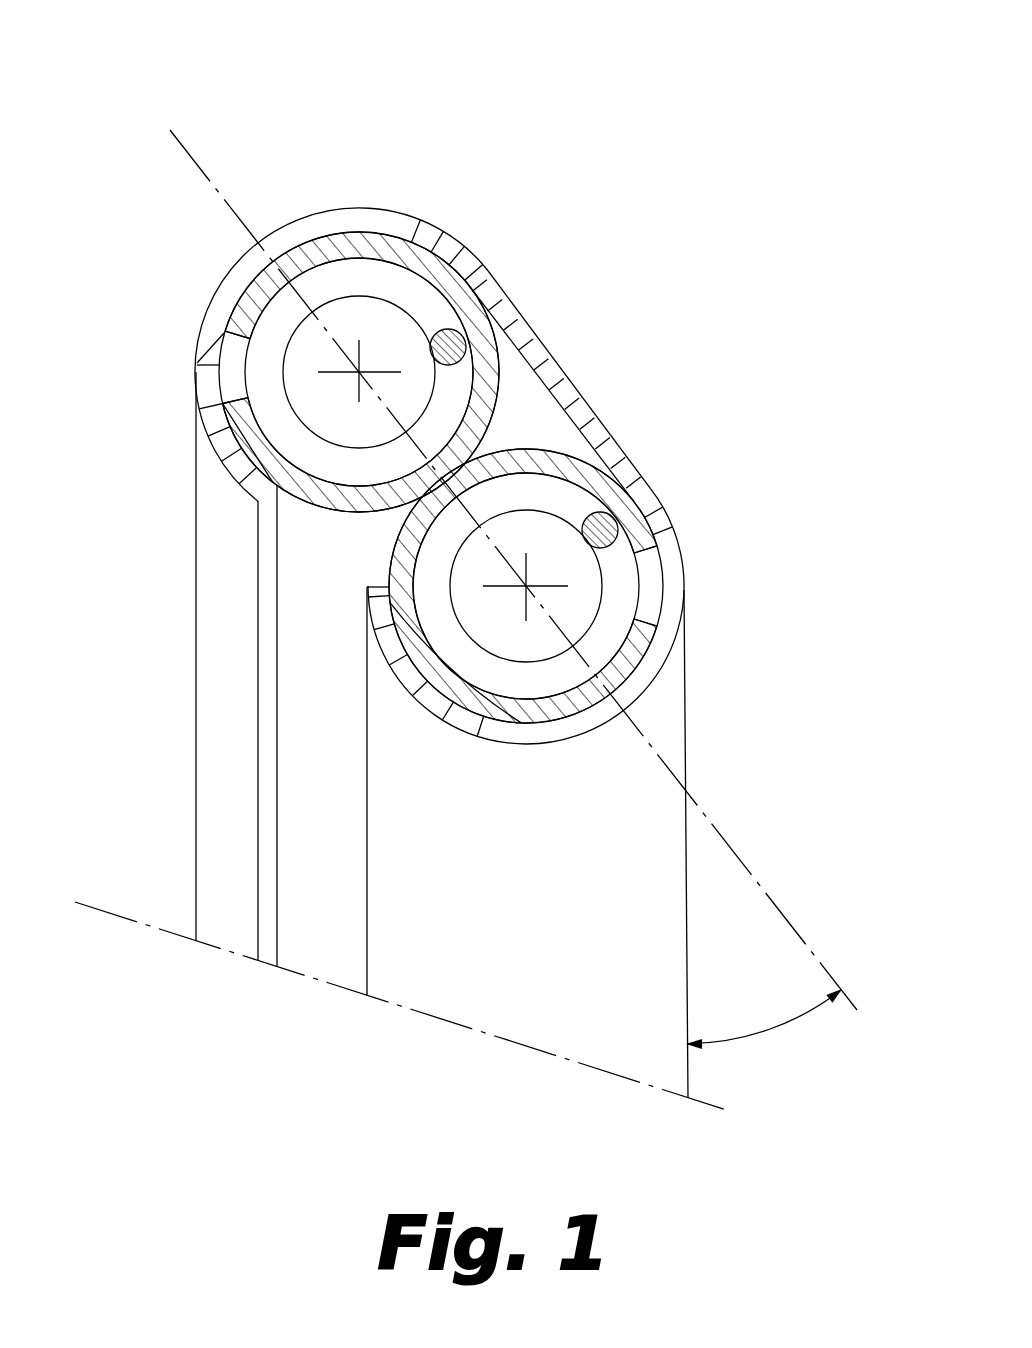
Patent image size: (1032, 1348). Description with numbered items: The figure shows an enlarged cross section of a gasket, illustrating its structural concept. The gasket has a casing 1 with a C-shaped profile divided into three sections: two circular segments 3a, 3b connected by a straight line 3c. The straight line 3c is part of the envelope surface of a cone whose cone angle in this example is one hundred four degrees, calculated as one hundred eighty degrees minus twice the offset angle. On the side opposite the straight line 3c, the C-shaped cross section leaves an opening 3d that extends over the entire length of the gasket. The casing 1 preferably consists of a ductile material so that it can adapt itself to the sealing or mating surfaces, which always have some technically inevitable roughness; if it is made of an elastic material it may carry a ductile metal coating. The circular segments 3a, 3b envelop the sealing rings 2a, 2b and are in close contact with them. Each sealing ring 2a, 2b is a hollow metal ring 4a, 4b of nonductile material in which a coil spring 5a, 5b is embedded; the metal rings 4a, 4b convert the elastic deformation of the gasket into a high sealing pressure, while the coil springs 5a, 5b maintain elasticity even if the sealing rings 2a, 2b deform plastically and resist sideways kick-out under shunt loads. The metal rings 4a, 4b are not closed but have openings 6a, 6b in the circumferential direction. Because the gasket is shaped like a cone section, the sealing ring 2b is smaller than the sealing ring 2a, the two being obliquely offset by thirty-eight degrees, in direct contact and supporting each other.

The casing 1 is at (459, 549).
The sealing ring 2a is at (368, 313).
The sealing ring 2b is at (555, 538).
The circular segment 3a is at (338, 196).
The circular segment 3b is at (712, 653).
The straight line 3c is at (547, 283).
The opening 3d is at (327, 623).
The metal ring 4a is at (290, 262).
The metal ring 4b is at (626, 662).
The coil spring 5a is at (450, 328).
The coil spring 5b is at (618, 528).
The opening 6a is at (236, 380).
The opening 6b is at (650, 580).